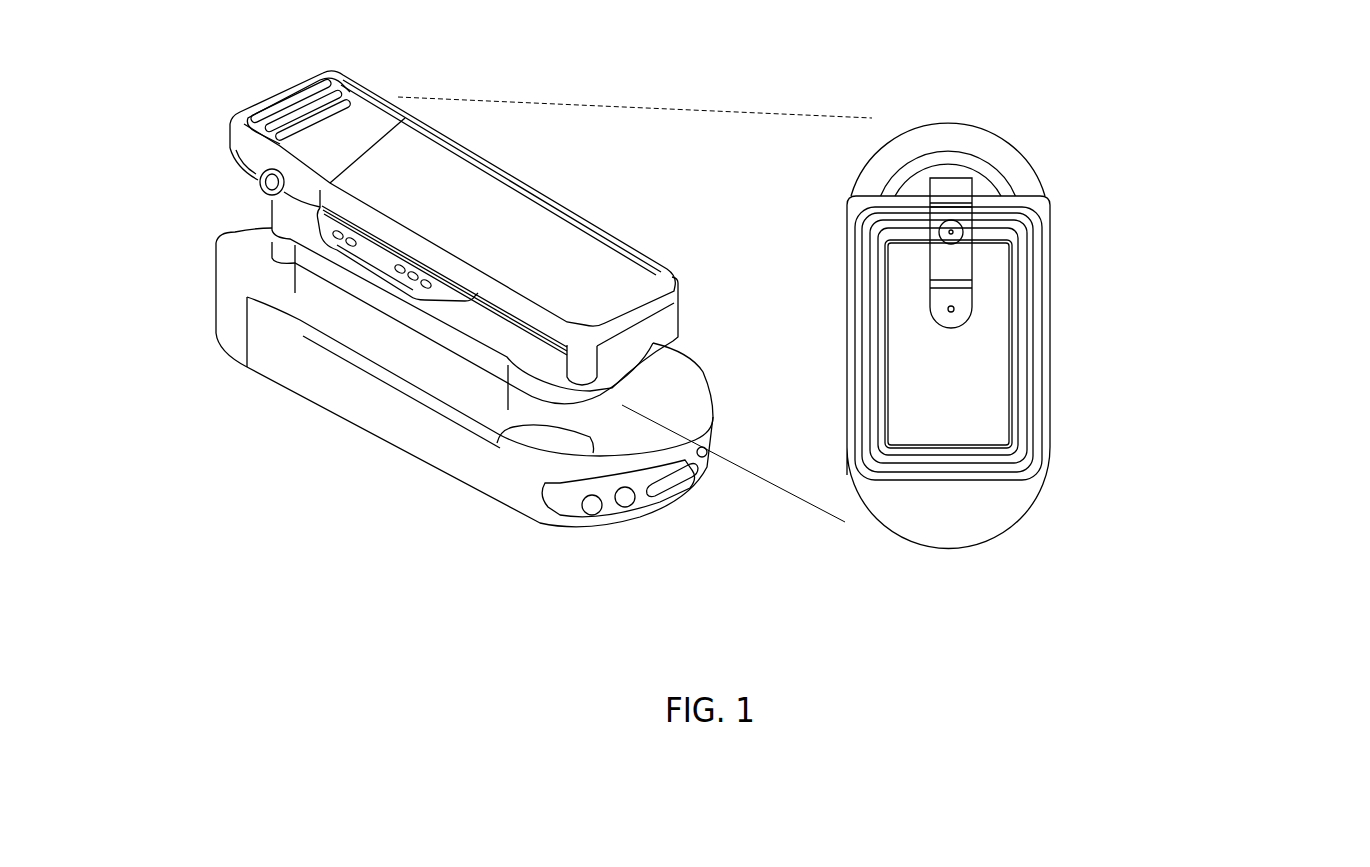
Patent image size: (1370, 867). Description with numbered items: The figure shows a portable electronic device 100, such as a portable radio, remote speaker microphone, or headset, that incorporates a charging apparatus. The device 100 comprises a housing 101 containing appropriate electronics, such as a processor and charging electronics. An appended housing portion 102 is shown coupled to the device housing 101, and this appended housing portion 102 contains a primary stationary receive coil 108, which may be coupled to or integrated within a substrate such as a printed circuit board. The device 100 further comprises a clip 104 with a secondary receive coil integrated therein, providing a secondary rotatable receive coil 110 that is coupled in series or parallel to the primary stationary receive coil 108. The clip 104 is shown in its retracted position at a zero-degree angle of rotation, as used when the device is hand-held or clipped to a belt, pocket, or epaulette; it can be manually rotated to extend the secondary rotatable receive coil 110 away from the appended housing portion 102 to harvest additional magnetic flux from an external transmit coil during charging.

The portable electronic device 100 is at (464, 403).
The housing 101 is at (449, 462).
The appended housing portion 102 is at (452, 365).
The clip 104 is at (475, 184).
The primary stationary receive coil 108 is at (1037, 354).
The secondary rotatable receive coil 110 is at (1000, 188).